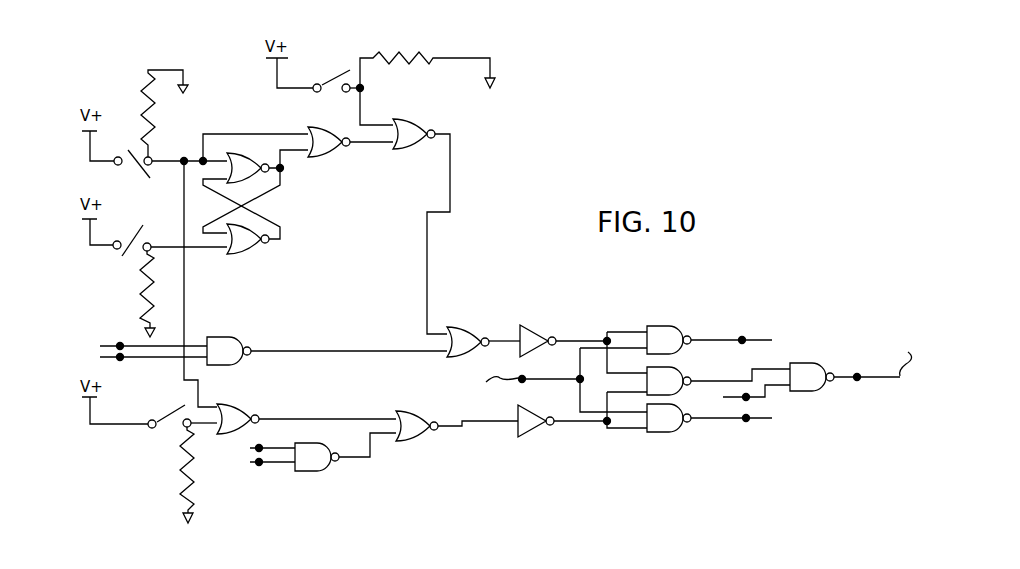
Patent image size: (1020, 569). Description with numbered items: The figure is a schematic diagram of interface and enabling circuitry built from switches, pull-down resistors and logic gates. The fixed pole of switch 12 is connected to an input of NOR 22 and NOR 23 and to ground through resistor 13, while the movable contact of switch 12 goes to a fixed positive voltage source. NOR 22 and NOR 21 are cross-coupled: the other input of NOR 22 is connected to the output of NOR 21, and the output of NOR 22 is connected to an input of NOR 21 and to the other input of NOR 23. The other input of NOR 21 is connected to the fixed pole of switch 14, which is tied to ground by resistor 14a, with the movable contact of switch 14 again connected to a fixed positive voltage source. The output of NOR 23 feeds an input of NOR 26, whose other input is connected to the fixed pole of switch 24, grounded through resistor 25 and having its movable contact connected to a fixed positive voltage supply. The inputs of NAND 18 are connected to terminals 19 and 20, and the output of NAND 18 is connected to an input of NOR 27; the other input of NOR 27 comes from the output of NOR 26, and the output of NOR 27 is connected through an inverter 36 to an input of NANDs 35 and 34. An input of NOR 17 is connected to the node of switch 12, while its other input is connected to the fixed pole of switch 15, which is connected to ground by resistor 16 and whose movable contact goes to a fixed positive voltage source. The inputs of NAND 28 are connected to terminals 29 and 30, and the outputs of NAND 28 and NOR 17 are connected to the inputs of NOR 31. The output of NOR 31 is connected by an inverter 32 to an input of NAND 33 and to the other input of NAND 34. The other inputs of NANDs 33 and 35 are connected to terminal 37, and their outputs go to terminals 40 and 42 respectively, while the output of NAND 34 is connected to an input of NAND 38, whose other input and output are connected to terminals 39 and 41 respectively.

The switch 12 is at (132, 156).
The resistor 13 is at (164, 113).
The switch 14 is at (124, 248).
The resistor 14a is at (144, 294).
The switch 15 is at (170, 421).
The resistor 16 is at (179, 490).
The NOR 17 is at (233, 417).
The NAND 18 is at (230, 347).
The terminal 19 is at (119, 342).
The terminal 20 is at (121, 360).
The NOR 21 is at (250, 244).
The NOR 22 is at (262, 160).
The NOR 23 is at (323, 148).
The switch 24 is at (332, 80).
The resistor 25 is at (425, 53).
The NOR 26 is at (417, 127).
The NOR 27 is at (465, 334).
The NAND 28 is at (318, 466).
The terminal 29 is at (262, 444).
The terminal 30 is at (260, 466).
The NOR 31 is at (408, 434).
The inverter 32 is at (527, 433).
The NAND 33 is at (670, 428).
The NAND 34 is at (677, 378).
The NAND 35 is at (675, 335).
The inverter 36 is at (537, 338).
The terminal 37 is at (525, 383).
The NAND 38 is at (813, 372).
The terminal 39 is at (749, 400).
The terminal 40 is at (747, 423).
The terminal 41 is at (858, 381).
The terminal 42 is at (745, 338).